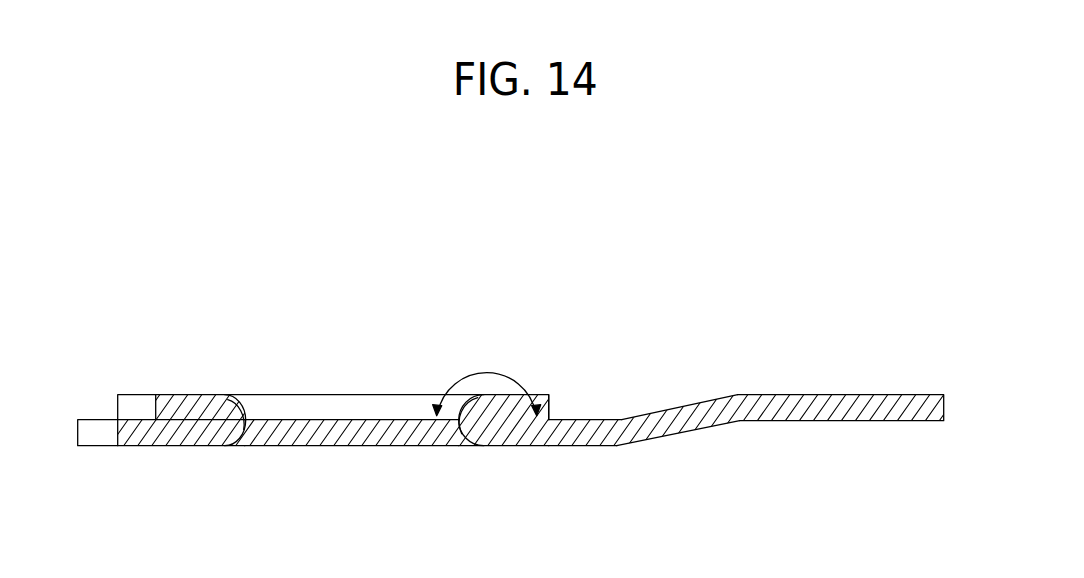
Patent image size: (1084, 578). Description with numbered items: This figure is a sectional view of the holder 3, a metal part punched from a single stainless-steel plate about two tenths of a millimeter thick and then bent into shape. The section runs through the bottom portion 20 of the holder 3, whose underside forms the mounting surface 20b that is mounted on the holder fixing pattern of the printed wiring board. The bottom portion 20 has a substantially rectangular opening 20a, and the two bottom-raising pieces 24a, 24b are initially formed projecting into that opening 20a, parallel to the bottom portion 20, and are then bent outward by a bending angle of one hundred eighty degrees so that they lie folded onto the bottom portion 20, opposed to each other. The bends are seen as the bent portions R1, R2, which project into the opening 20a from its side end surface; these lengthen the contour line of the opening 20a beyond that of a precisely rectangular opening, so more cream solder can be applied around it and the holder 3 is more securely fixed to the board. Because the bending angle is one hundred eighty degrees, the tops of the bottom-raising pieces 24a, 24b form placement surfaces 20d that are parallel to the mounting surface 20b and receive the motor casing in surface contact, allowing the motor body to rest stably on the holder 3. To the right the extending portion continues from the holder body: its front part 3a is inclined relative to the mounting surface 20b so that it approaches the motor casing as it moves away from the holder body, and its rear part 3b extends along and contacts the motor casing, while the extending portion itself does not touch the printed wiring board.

The holder 3 is at (152, 460).
The front part of the extending portion 3a is at (673, 422).
The rear part of the extending portion 3b is at (780, 412).
The bottom portion 20 is at (577, 430).
The opening 20a is at (348, 433).
The mounting surface 20b is at (517, 445).
The placement surfaces 20d is at (196, 393).
The bottom-raising piece 24a is at (191, 410).
The bottom-raising piece 24b is at (516, 412).
The bent portion R1 is at (244, 437).
The bent portion R2 is at (461, 435).